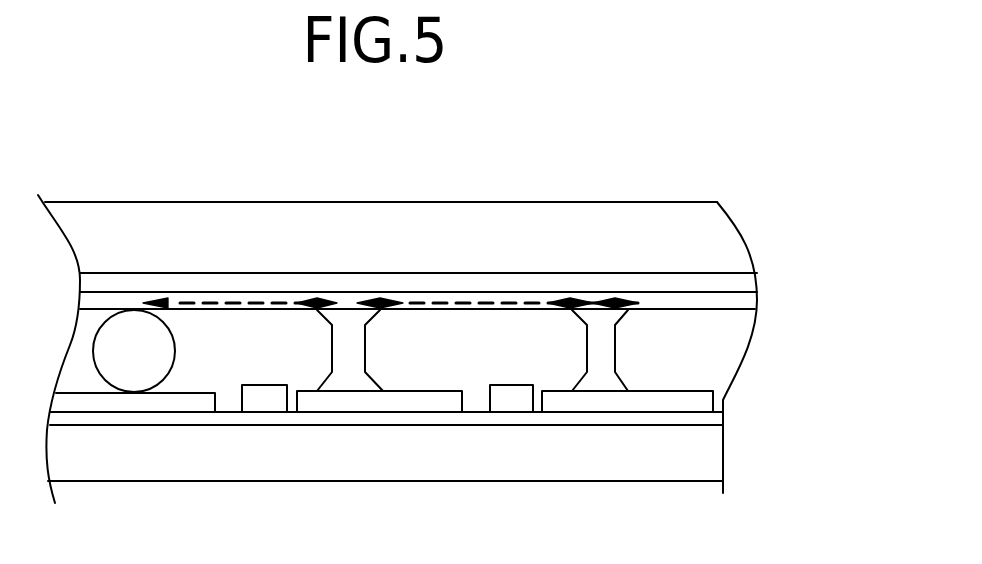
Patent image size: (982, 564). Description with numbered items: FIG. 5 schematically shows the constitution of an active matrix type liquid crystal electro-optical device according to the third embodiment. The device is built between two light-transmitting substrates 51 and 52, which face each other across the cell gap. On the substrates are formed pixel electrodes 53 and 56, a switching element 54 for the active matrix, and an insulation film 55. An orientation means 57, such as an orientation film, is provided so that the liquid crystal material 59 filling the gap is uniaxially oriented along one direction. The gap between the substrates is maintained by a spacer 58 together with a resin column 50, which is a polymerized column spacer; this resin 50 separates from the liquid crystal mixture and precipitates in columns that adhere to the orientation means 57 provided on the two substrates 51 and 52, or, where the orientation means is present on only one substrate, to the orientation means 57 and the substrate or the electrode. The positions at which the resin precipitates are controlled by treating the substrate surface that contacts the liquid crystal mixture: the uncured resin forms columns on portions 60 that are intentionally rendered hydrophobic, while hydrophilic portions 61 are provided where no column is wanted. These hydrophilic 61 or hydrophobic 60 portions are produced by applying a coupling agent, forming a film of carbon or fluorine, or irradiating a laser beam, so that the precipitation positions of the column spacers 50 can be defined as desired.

The resin column 50 is at (345, 340).
The light-transmitting substrate 51 is at (668, 467).
The light-transmitting substrate 52 is at (622, 228).
The pixel electrode 53 is at (675, 403).
The switching element 54 is at (517, 400).
The insulation film 55 is at (463, 417).
The pixel electrode 56 is at (685, 280).
The orientation means 57 is at (733, 290).
The spacer 58 is at (143, 365).
The liquid crystal material 59 is at (707, 343).
The hydrophobic portion 60 is at (348, 306).
The hydrophilic portion 61 is at (443, 303).